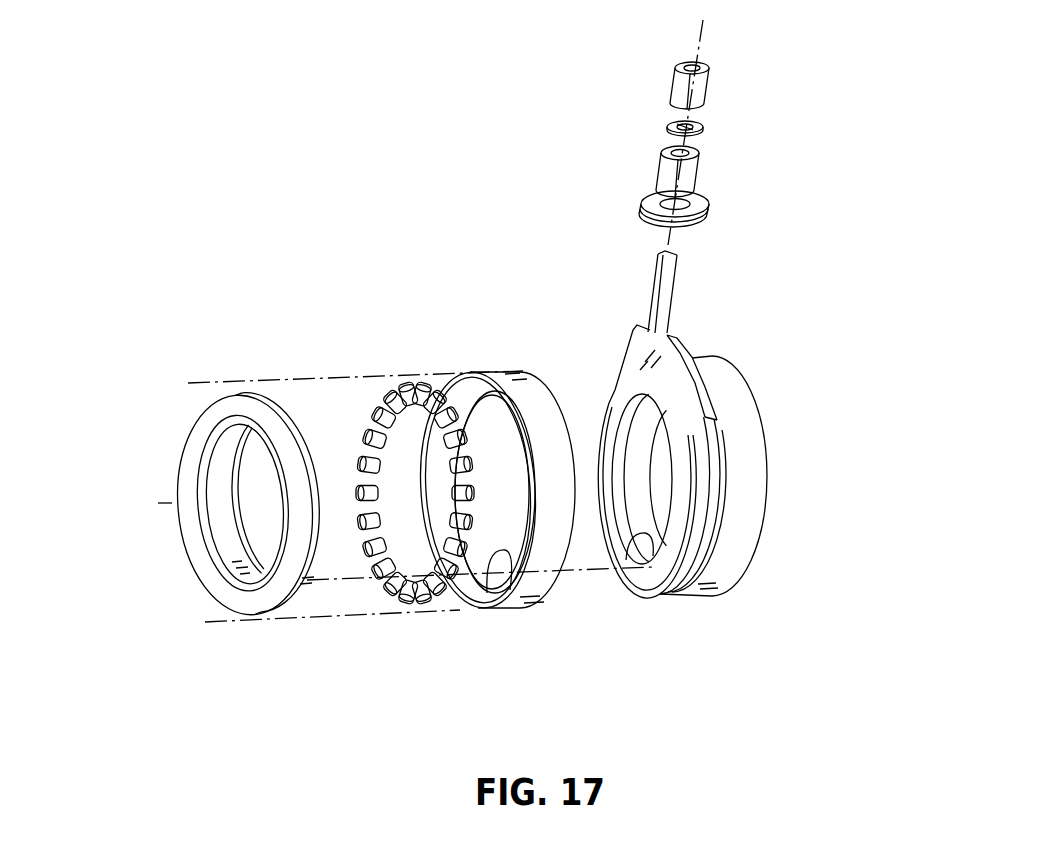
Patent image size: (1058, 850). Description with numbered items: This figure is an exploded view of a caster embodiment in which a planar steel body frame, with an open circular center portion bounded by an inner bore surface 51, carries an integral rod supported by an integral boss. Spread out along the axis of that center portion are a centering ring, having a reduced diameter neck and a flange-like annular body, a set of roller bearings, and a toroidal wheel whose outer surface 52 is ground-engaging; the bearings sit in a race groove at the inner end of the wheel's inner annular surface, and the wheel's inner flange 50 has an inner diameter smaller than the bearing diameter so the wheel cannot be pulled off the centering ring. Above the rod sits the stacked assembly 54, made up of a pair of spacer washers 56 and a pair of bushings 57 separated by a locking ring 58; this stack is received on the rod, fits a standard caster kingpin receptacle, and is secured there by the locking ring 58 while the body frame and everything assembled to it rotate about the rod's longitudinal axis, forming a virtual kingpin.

The inner flange 50 is at (490, 603).
The inner bore surface 51 is at (643, 570).
The outer surface 52 is at (527, 597).
The stacked assembly 54 is at (647, 135).
The spacer washer 56 is at (645, 216).
The bushing 57 is at (702, 167).
The locking ring 58 is at (668, 122).